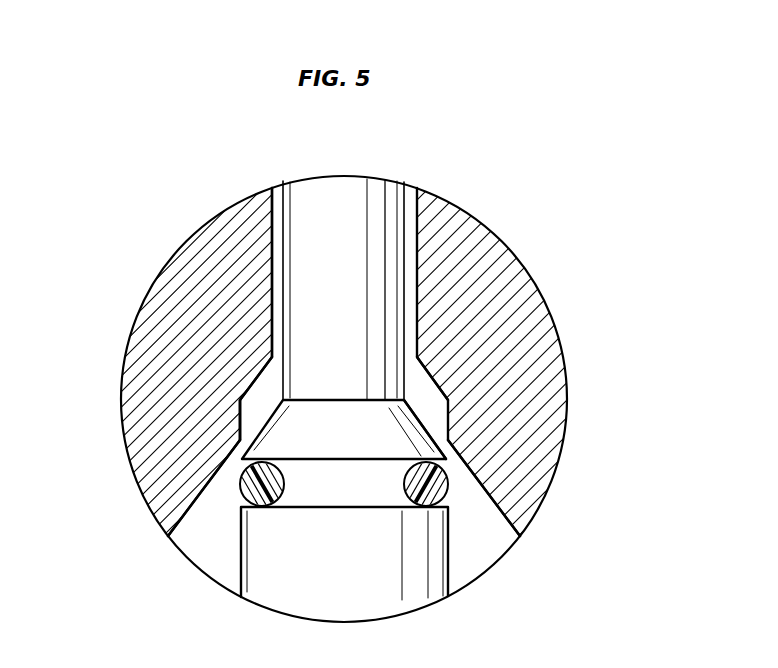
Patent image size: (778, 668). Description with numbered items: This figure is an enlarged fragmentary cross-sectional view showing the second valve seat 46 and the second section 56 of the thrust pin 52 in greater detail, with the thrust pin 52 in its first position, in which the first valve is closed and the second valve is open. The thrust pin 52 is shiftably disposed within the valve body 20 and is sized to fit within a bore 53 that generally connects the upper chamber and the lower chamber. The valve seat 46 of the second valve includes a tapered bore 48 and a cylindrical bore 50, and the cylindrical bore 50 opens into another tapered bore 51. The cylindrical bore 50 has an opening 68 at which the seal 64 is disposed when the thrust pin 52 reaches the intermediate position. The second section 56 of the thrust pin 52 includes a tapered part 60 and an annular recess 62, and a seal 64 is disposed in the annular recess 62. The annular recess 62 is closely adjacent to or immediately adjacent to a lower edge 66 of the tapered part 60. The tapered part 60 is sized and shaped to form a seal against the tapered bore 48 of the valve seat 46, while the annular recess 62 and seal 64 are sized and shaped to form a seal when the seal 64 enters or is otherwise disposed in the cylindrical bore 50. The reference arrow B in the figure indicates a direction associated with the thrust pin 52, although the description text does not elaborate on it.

The valve body 20 is at (467, 246).
The thrust pin 52 is at (317, 222).
The bore 53 is at (271, 228).
The tapered bore 48 is at (250, 386).
The valve seat 46 is at (226, 402).
The cylindrical bore 50 is at (239, 422).
The opening 68 is at (240, 446).
The second section 56 is at (403, 396).
The tapered part 60 is at (366, 437).
The lower edge 66 is at (447, 459).
The seal 64 is at (450, 484).
The tapered bore 51 is at (510, 512).
The annular recess 62 is at (368, 494).
The flow direction arrow B is at (312, 483).